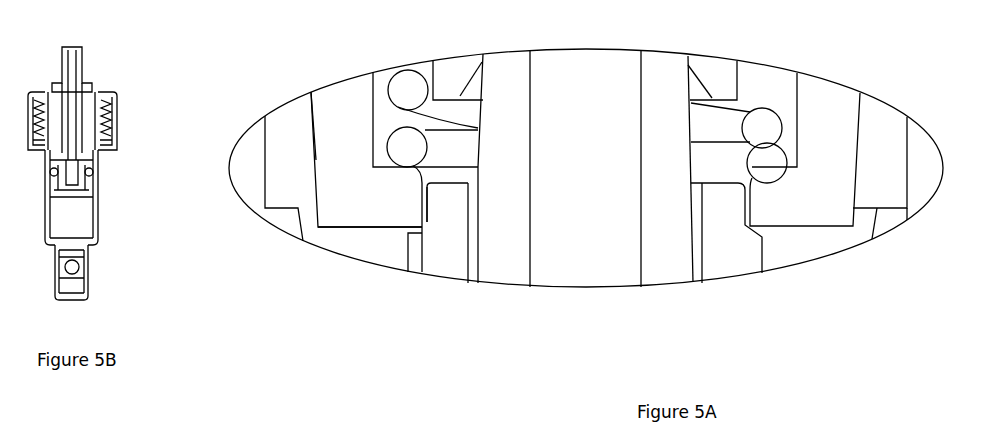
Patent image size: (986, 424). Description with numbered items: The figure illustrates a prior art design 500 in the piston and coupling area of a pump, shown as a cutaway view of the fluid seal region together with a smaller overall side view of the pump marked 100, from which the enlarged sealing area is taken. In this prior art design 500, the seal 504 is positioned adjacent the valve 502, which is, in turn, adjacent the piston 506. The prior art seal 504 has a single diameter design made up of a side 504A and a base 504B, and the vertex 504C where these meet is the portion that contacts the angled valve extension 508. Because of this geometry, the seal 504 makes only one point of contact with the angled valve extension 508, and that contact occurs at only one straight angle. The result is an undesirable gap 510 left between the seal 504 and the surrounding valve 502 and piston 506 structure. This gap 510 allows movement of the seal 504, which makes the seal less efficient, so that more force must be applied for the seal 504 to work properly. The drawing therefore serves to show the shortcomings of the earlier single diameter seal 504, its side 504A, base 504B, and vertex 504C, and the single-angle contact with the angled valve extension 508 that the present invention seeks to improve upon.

In FIG. 5A, the prior art design 500 is at (758, 56).
In FIG. 5A, the valve 502 is at (418, 263).
In FIG. 5A, the seal 504 is at (335, 183).
In FIG. 5A, the side 504A is at (310, 132).
In FIG. 5A, the base 504B is at (337, 228).
In FIG. 5A, the vertex 504C is at (418, 220).
In FIG. 5A, the piston 506 is at (513, 273).
In FIG. 5A, the angled valve extension 508 is at (423, 232).
In FIG. 5A, the gap 510 is at (428, 219).
In FIG. 5B, the connector 100 is at (228, 172).